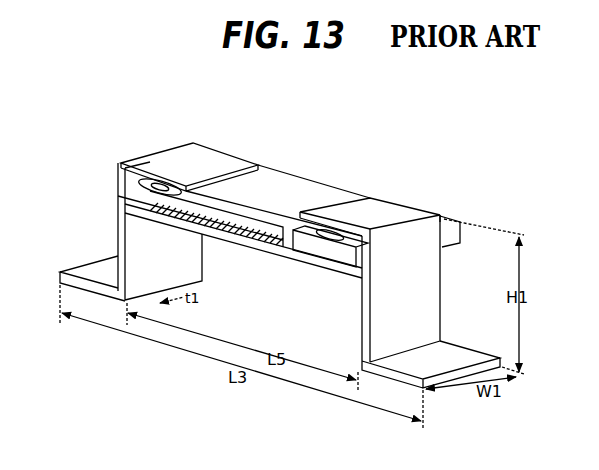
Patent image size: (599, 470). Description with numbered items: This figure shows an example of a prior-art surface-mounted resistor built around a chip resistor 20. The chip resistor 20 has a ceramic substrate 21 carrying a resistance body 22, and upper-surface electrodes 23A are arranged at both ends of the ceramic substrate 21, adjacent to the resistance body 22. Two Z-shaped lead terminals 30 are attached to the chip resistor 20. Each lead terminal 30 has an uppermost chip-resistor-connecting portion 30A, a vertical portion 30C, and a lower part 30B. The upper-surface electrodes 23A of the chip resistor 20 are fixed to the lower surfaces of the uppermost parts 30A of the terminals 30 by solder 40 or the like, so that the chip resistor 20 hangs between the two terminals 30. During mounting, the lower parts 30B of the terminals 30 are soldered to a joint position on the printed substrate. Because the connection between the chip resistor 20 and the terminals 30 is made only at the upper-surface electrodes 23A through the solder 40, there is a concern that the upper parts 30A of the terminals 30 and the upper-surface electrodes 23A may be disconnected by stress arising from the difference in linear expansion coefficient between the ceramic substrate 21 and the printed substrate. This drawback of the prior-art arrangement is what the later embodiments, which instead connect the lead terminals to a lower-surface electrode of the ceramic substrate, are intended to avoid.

The chip resistor 20 is at (427, 201).
The ceramic substrate 21 is at (252, 246).
The resistance body 22 is at (310, 189).
The upper-surface electrode 23A is at (160, 208).
The lead terminal 30 is at (112, 171).
The chip-resistor-connecting portion 30A is at (190, 158).
The lower part of the terminal 30B is at (103, 275).
The terminal portion 30C is at (190, 258).
The solder 40 is at (160, 196).